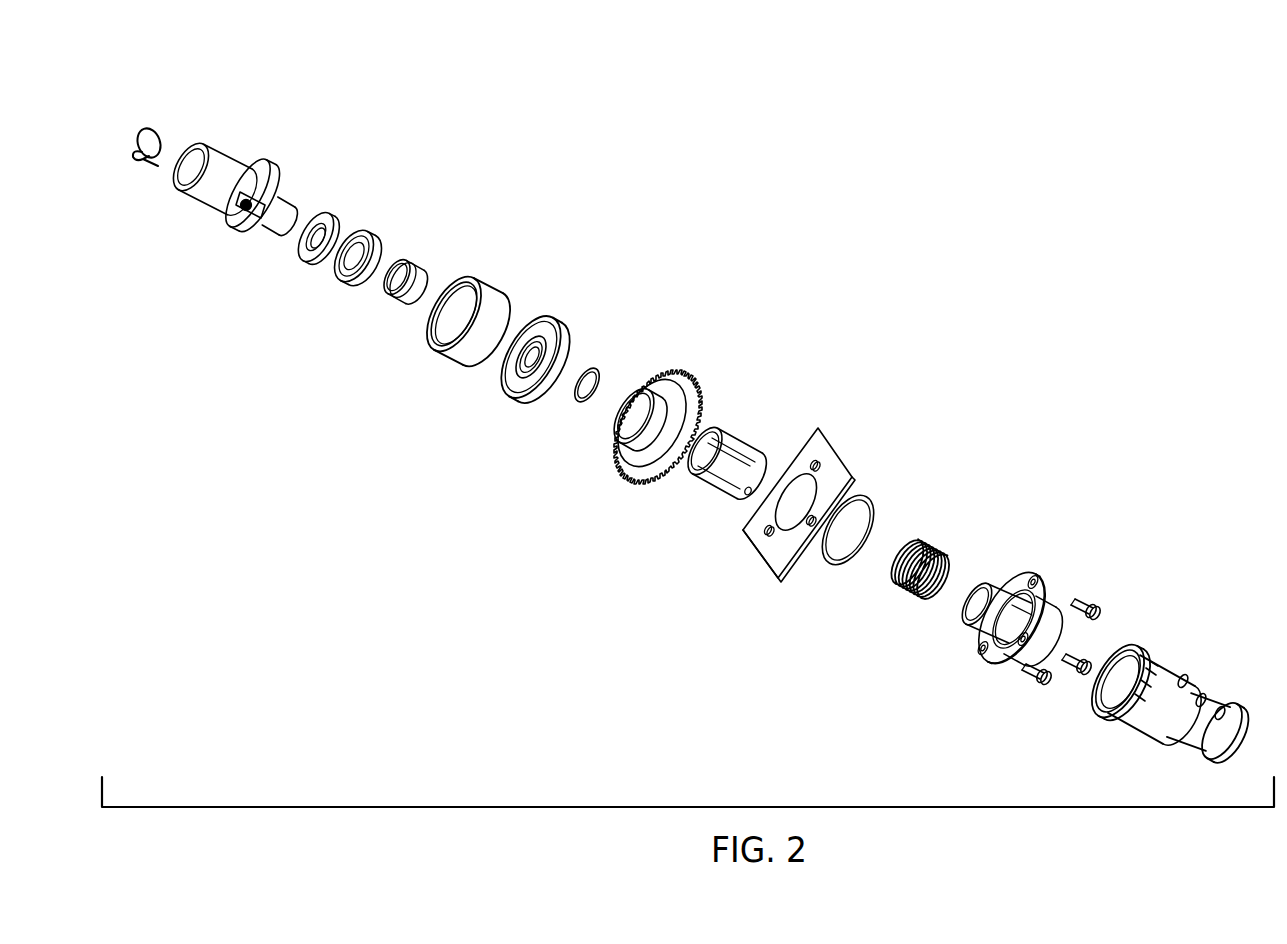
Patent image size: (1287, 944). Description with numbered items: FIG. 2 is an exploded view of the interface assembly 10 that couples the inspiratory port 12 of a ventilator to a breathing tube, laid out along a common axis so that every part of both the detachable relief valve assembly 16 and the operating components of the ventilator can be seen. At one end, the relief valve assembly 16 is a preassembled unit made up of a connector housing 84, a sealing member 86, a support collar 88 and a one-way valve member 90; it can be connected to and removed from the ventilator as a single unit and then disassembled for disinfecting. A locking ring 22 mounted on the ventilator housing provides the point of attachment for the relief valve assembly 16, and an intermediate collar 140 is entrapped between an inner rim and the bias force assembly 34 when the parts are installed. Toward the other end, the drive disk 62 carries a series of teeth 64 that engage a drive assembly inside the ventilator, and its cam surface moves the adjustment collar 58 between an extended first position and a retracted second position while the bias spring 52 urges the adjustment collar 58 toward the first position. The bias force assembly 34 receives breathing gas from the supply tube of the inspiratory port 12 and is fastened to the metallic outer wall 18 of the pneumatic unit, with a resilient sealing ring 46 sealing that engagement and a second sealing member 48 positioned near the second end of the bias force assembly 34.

The interface assembly 10 is at (871, 324).
The inspiratory port 12 is at (1165, 666).
The relief valve assembly 16 is at (421, 191).
The outer wall 18 is at (820, 445).
The locking ring 22 is at (490, 280).
The bias force assembly 34 is at (1061, 584).
The resilient sealing ring 46 is at (873, 502).
The second sealing member 48 is at (595, 372).
The bias spring 52 is at (939, 542).
The adjustment collar 58 is at (745, 448).
The drive disk 62 is at (678, 375).
The teeth 64 is at (702, 395).
The connector housing 84 is at (218, 152).
The sealing member 86 is at (328, 217).
The support collar 88 is at (375, 240).
The one-way valve member 90 is at (149, 128).
The intermediate collar 140 is at (412, 263).